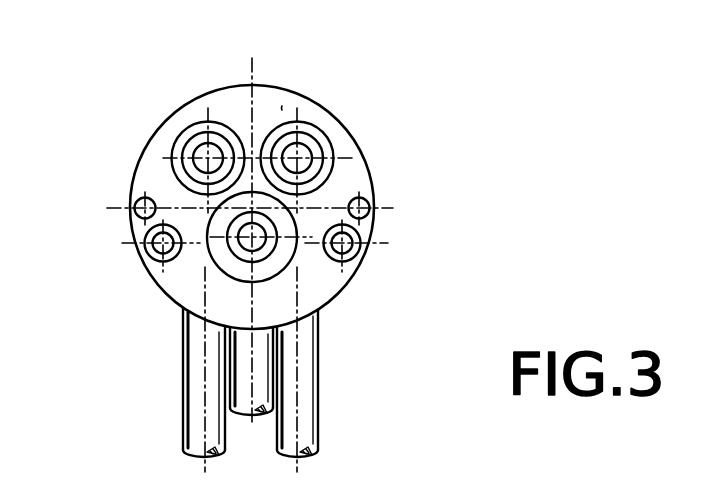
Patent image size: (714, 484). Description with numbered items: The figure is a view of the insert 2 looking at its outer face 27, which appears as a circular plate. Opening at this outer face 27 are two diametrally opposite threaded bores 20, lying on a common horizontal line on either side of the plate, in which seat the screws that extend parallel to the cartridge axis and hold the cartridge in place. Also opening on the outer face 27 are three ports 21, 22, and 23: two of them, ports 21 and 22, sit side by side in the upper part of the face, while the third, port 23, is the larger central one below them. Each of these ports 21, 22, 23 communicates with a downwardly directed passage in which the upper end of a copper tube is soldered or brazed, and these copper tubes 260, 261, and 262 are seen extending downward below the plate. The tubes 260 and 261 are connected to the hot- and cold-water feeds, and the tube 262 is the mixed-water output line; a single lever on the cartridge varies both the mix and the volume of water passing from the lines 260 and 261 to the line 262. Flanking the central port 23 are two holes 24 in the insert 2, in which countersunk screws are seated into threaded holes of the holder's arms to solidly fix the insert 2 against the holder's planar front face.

The insert 2 is at (338, 144).
The threaded bores 20 is at (140, 206).
The port 21 is at (197, 152).
The port 22 is at (297, 152).
The port 23 is at (246, 245).
The holes 24 is at (150, 256).
The outer face 27 is at (282, 108).
The copper tube 260 is at (303, 420).
The copper tube 261 is at (200, 399).
The copper tube 262 is at (262, 362).